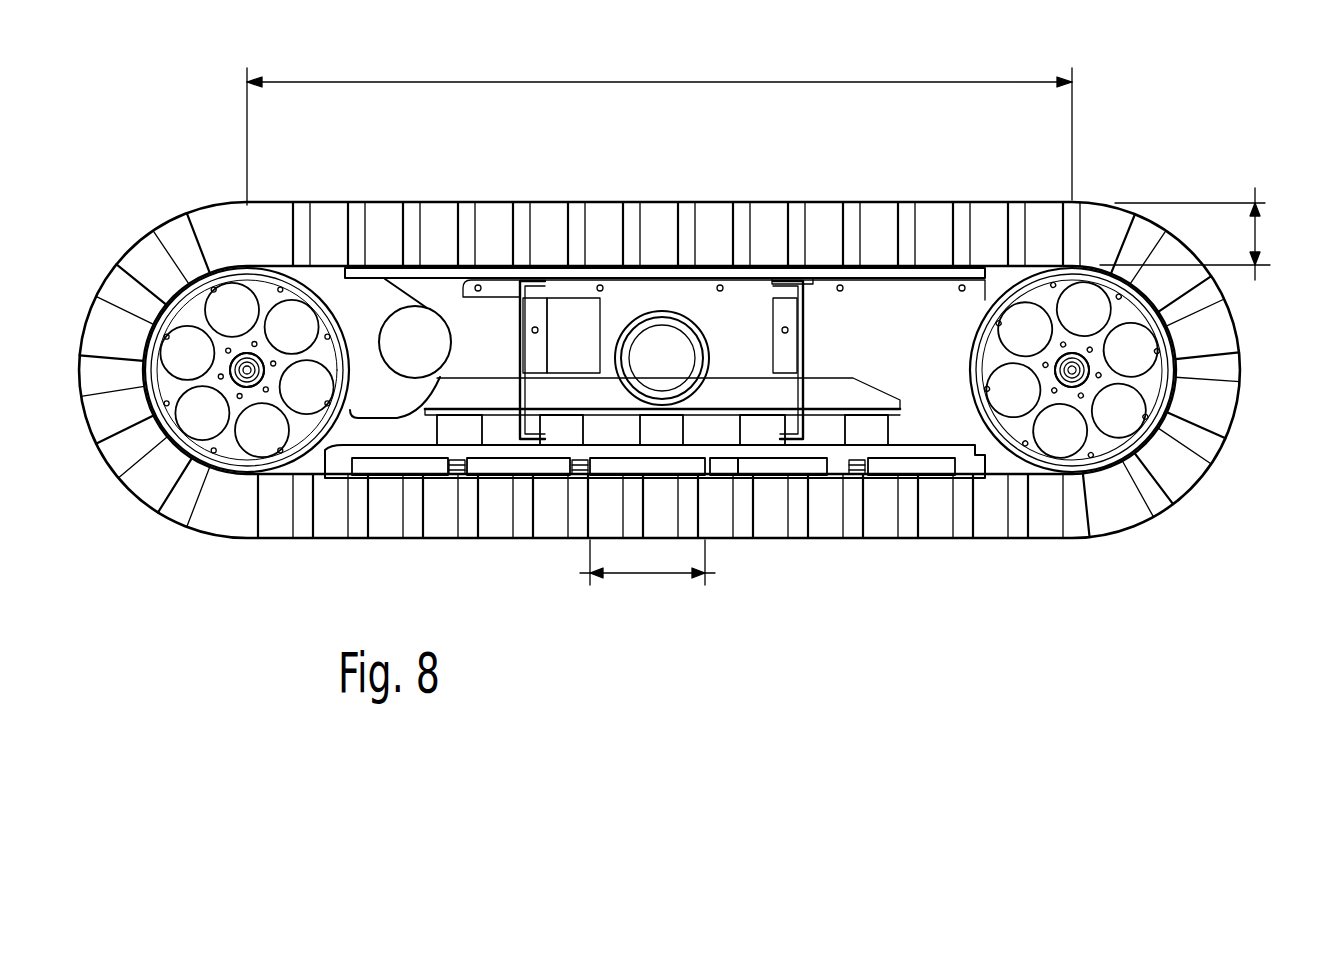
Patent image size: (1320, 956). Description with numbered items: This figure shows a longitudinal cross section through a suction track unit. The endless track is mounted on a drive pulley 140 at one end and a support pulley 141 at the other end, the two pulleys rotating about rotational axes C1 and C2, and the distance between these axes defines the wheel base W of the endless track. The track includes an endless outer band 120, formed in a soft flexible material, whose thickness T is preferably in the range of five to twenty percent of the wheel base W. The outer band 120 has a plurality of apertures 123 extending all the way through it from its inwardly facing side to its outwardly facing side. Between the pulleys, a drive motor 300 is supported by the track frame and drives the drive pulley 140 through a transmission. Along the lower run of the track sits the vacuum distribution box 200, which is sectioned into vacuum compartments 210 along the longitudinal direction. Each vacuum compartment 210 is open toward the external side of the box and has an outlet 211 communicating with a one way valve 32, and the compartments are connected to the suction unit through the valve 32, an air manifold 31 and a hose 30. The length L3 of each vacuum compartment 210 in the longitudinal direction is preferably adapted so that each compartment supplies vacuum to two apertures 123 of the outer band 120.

The outer band 120 is at (305, 518).
The apertures 123 is at (208, 512).
The drive pulley 140 is at (208, 453).
The support pulley 141 is at (1145, 405).
The rotational axis C1 is at (245, 360).
The rotational axis C2 is at (1095, 372).
The vacuum distribution box 200 is at (922, 436).
The vacuum compartments 210 is at (402, 467).
The outlet 211 is at (455, 472).
The drive motor 300 is at (405, 335).
The hose 30 is at (655, 355).
The air manifold 31 is at (745, 395).
The one way valve 32 is at (460, 430).
The wheel base W is at (659, 135).
The thickness T is at (1260, 230).
The length L3 is at (640, 580).